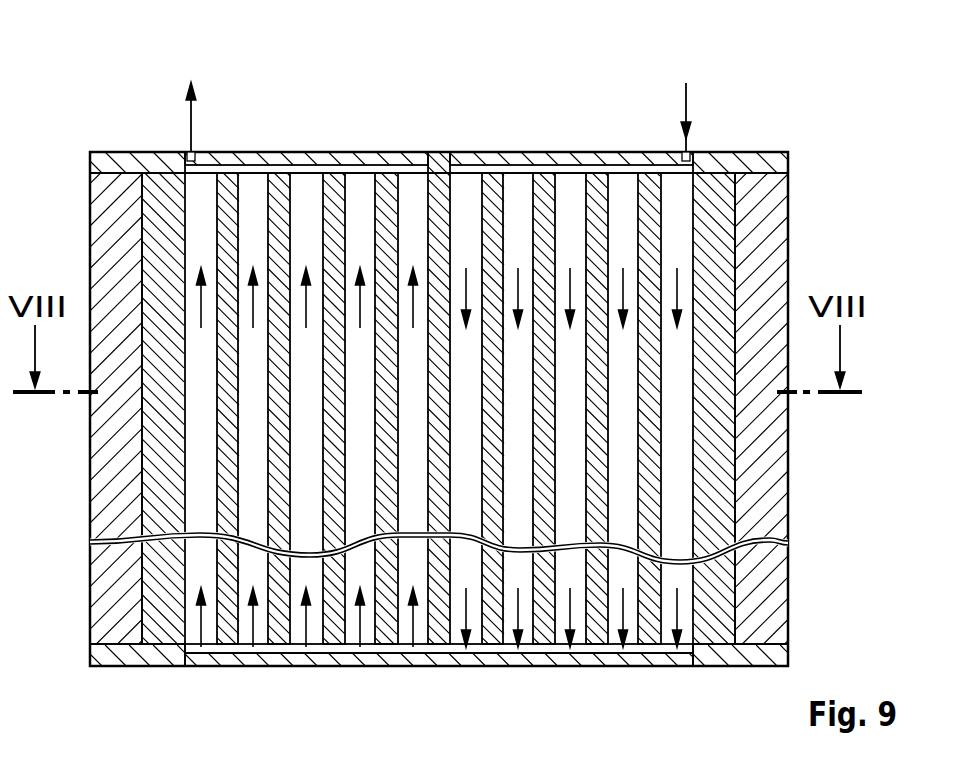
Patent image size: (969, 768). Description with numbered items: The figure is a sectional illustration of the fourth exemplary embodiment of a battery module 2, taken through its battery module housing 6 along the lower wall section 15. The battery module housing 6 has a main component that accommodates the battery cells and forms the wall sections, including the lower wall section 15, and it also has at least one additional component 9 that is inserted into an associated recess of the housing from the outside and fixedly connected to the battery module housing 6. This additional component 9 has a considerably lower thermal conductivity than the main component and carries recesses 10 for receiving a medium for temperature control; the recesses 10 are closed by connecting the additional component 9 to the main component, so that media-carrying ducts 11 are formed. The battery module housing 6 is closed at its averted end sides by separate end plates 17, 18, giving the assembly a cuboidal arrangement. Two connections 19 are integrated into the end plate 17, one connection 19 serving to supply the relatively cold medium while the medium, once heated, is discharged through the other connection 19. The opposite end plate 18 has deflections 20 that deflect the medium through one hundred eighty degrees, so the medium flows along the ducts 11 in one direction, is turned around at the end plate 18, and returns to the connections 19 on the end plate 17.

The battery module 2 is at (827, 98).
The battery module housing 6 is at (746, 128).
The additional component 9 is at (722, 262).
The recesses 10 is at (202, 193).
The media-carrying ducts 11 is at (677, 192).
The lower wall section 15 is at (97, 245).
The end plate 17 is at (493, 157).
The end plate 18 is at (547, 663).
The connections 19 is at (190, 150).
The deflections 20 is at (442, 652).